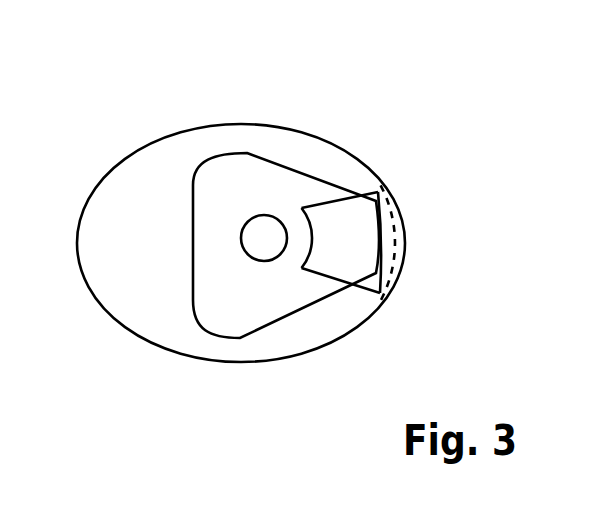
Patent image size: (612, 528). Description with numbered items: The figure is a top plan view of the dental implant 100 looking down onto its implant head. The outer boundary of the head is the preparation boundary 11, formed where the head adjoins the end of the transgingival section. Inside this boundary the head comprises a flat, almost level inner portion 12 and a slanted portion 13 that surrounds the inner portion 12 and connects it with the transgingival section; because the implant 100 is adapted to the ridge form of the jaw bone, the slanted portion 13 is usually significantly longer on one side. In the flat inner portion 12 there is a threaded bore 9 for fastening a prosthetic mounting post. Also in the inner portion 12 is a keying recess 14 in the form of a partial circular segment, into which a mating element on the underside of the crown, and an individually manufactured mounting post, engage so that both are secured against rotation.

The implant 100 is at (137, 110).
The threaded bore 9 is at (253, 232).
The preparation boundary 11 is at (347, 151).
The inner portion 12 is at (222, 293).
The slanted portion 13 is at (368, 308).
The keying recess 14 is at (340, 246).